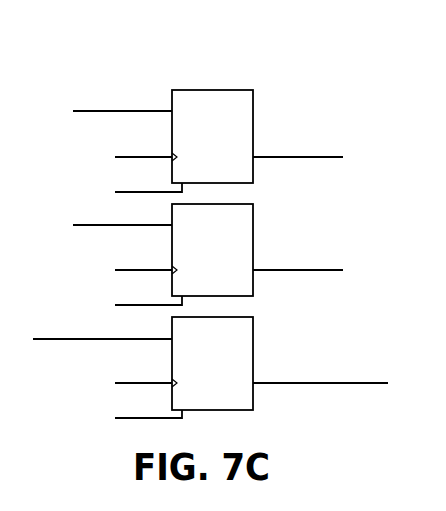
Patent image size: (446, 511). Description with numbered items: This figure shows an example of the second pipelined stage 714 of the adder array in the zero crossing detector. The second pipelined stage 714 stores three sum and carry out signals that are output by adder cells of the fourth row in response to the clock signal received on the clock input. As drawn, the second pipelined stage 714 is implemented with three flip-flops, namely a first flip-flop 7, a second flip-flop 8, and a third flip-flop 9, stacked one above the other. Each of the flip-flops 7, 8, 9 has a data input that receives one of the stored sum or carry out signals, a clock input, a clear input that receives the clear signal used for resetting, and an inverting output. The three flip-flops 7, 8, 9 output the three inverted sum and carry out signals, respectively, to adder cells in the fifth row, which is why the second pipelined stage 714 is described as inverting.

The second pipelined stage 714 is at (212, 61).
The flip-flop FF7 7 is at (247, 122).
The flip-flop FF8 8 is at (247, 234).
The flip-flop FF9 9 is at (247, 348).